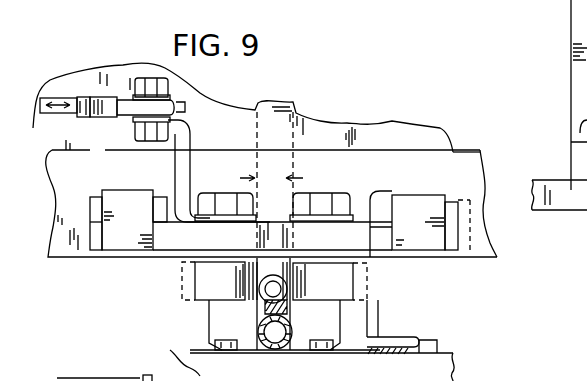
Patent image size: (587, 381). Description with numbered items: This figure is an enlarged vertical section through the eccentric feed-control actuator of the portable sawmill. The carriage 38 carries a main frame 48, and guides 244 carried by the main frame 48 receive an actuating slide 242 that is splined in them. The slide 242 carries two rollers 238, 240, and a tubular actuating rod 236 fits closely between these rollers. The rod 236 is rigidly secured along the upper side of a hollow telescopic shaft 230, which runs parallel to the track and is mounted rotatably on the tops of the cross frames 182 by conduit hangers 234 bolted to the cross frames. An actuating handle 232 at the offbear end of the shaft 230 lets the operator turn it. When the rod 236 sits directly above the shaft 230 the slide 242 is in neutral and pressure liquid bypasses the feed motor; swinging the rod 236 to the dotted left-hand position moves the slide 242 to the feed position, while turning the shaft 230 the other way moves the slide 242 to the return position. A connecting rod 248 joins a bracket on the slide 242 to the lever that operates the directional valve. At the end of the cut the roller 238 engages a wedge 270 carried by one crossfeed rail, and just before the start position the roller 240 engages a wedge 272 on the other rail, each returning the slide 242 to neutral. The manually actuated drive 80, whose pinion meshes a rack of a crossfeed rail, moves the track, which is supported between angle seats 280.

The main frame 48 is at (423, 128).
The carriage 38 is at (462, 149).
The actuating handle 232 is at (292, 106).
The connecting rod 248 is at (60, 99).
The guides 244 is at (150, 190).
The actuating slide 242 is at (407, 218).
The tubular actuating rod 236 is at (300, 240).
The roller 238 is at (198, 268).
The roller 240 is at (368, 276).
The hollow telescopic shaft 230 is at (257, 328).
The conduit hangers 234 is at (291, 351).
The wedge 272 is at (378, 315).
The cross frames 182 is at (455, 353).
The manually actuated drive 80 is at (128, 378).
The angle seats 280 is at (162, 374).
The wedge 270 is at (571, 33).